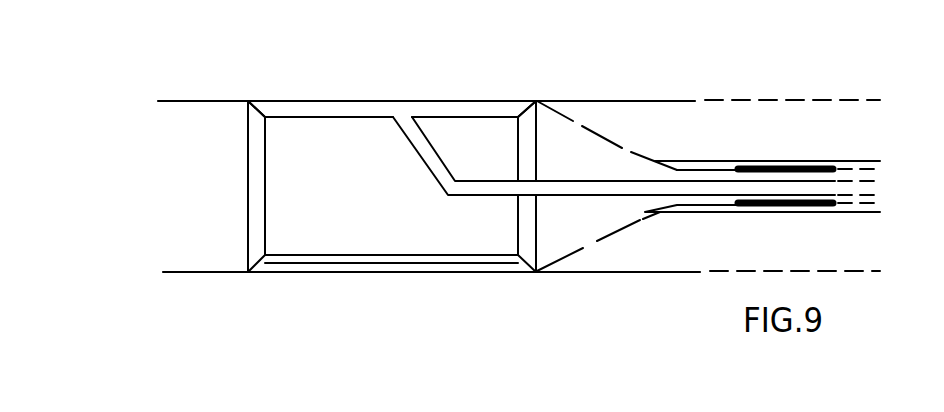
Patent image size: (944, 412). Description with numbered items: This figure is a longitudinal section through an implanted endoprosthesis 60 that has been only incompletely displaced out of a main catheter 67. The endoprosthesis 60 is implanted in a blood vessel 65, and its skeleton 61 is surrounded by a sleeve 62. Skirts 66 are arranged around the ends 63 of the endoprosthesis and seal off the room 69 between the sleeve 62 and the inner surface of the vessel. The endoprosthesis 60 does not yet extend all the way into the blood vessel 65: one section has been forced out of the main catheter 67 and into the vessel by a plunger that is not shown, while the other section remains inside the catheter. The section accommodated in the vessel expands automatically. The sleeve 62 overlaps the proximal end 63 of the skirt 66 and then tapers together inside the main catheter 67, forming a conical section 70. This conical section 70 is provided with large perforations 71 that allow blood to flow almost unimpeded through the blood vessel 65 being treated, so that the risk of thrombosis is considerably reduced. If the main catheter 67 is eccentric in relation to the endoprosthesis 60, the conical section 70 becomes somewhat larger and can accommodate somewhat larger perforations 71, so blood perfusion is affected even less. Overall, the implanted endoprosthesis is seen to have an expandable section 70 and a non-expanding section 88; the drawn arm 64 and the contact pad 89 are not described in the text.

The endoprosthesis 60 is at (376, 102).
The skeleton 61 is at (390, 187).
The sleeve 62 is at (355, 112).
The proximal end 63 is at (540, 222).
The spring arm 64 is at (418, 158).
The blood vessel 65 is at (312, 101).
The skirt 66 is at (527, 112).
The main catheter 67 is at (728, 158).
The room 69 is at (318, 268).
The conical section 70 is at (605, 133).
The perforations 71 is at (643, 222).
The non-expanding section 88 is at (722, 205).
The upper contact pad 89 is at (811, 165).